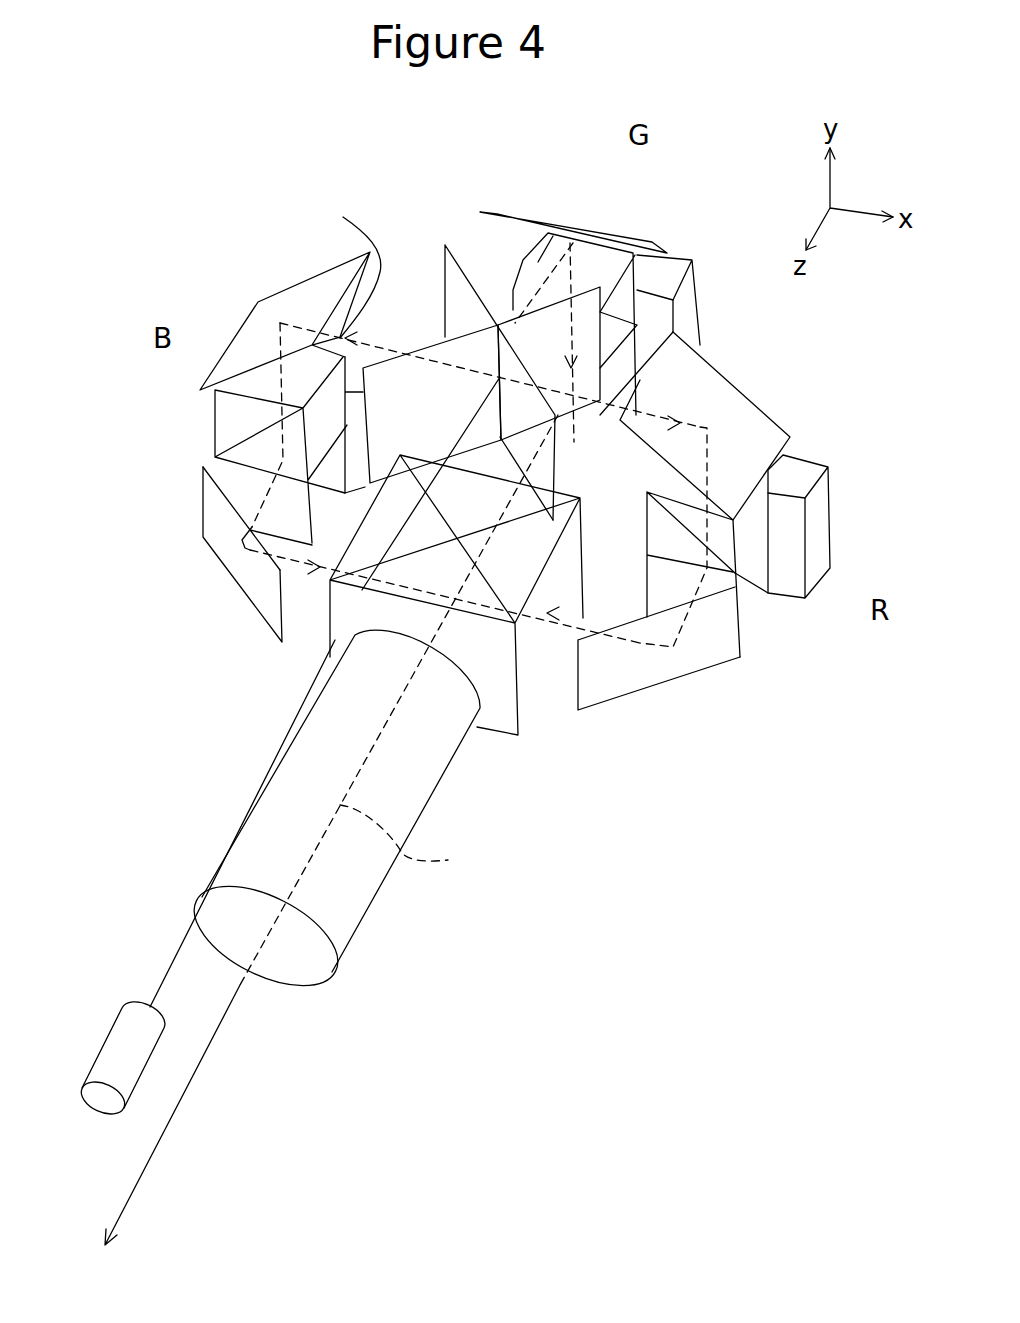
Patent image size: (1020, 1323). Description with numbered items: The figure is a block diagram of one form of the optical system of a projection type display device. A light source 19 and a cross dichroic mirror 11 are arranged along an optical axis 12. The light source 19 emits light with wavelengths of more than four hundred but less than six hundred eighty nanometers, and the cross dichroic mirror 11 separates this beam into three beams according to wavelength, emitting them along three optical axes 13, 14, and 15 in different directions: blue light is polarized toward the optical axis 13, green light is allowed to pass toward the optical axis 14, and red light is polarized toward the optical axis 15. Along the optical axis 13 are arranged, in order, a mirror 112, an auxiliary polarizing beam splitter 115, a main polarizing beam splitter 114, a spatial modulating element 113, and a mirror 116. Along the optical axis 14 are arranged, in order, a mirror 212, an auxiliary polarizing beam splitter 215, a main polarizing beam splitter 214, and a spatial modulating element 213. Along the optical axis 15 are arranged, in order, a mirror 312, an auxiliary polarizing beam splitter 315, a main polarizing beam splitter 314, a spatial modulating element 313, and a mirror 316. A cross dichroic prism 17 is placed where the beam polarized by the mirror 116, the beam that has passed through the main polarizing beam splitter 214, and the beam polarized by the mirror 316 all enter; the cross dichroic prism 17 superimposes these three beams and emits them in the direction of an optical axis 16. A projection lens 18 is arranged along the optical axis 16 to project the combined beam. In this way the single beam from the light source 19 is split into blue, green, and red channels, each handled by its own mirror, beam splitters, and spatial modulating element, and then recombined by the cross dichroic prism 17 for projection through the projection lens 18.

The cross dichroic mirror 11 is at (447, 280).
The optical axis 12 is at (178, 947).
The optical axis 13 is at (343, 217).
The optical axis 14 is at (515, 325).
The optical axis 15 is at (578, 445).
The optical axis 16 is at (407, 841).
The cross dichroic prism 17 is at (527, 703).
The projection lens 18 is at (263, 793).
The light source 19 is at (110, 1032).
The mirror 112 is at (280, 297).
The spatial modulating element 113 is at (357, 437).
The main polarizing beam splitter 114 is at (240, 490).
The auxiliary polarizing beam splitter 115 is at (212, 410).
The mirror 116 is at (258, 596).
The mirror 212 is at (503, 212).
The spatial modulating element 213 is at (667, 268).
The main polarizing beam splitter 214 is at (623, 355).
The auxiliary polarizing beam splitter 215 is at (635, 265).
The mirror 312 is at (705, 348).
The spatial modulating element 313 is at (820, 522).
The main polarizing beam splitter 314 is at (745, 596).
The auxiliary polarizing beam splitter 315 is at (757, 503).
The mirror 316 is at (645, 683).